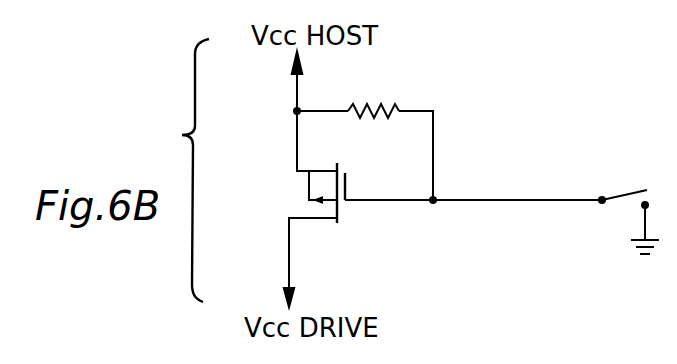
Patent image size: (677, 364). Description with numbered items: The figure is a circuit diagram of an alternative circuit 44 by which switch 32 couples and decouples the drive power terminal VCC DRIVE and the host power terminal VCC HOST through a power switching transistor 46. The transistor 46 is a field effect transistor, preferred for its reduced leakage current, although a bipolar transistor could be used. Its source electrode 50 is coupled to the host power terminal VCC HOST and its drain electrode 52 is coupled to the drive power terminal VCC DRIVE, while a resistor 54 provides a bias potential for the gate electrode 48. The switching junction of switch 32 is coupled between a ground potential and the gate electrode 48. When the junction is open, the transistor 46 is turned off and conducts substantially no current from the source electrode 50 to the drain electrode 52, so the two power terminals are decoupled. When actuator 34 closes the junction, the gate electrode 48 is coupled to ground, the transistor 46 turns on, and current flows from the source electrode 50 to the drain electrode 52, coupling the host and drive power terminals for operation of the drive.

The alternative circuit 44 is at (177, 170).
The source electrode 50 is at (296, 110).
The resistor 54 is at (392, 108).
The power switching transistor 46 is at (350, 200).
The drain electrode 52 is at (289, 237).
The gate electrode 48 is at (433, 200).
The switch 32 is at (590, 180).
The actuator 34 is at (628, 191).